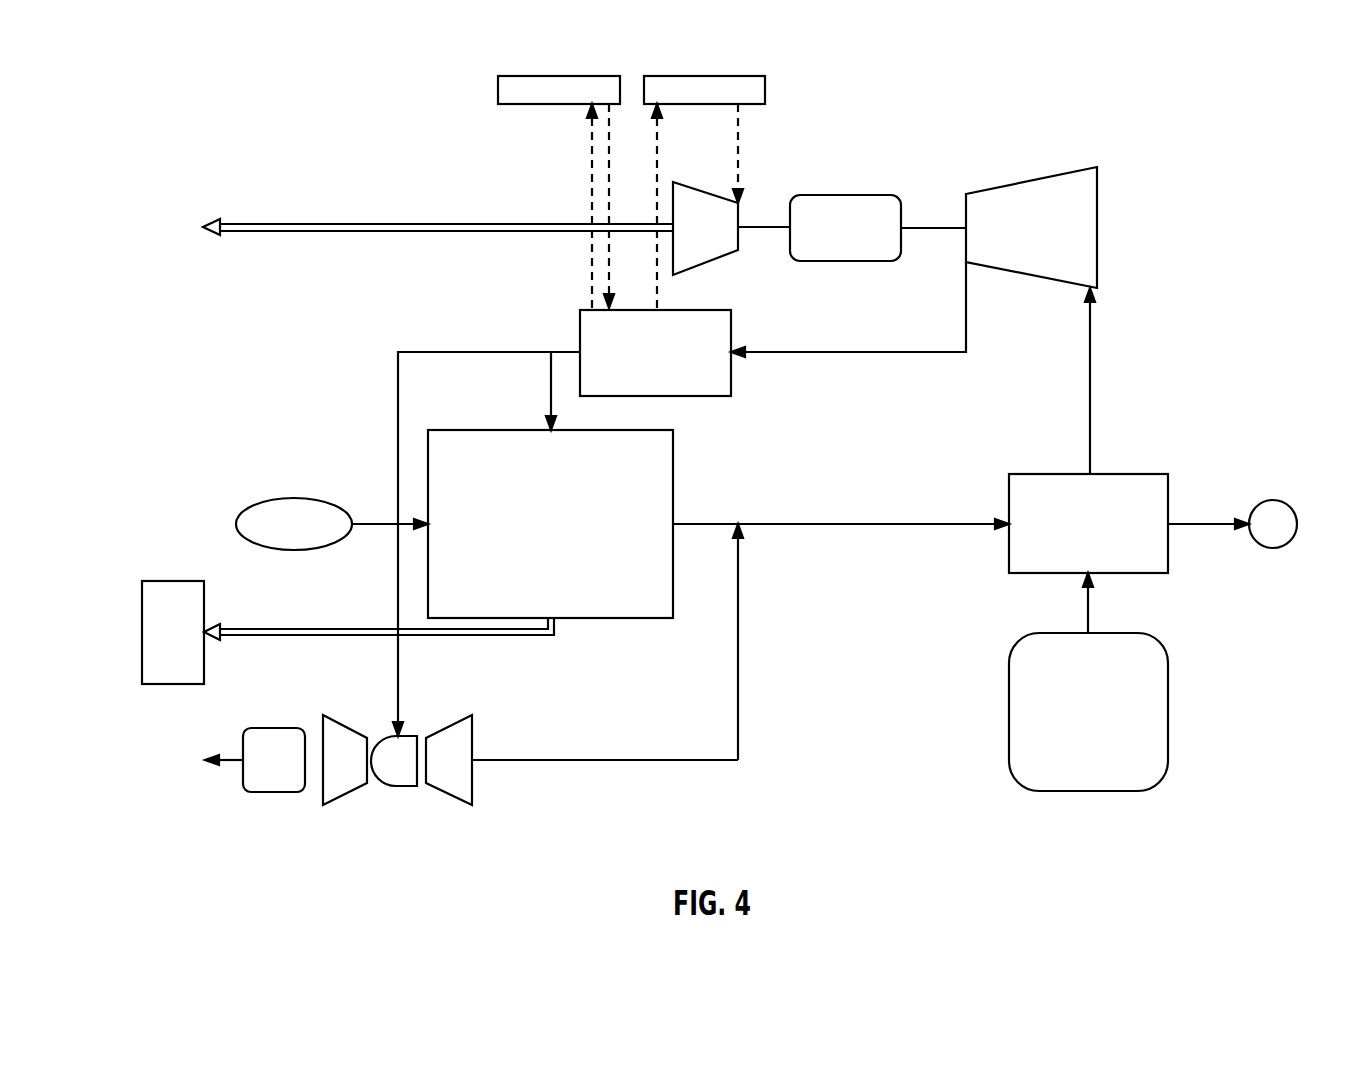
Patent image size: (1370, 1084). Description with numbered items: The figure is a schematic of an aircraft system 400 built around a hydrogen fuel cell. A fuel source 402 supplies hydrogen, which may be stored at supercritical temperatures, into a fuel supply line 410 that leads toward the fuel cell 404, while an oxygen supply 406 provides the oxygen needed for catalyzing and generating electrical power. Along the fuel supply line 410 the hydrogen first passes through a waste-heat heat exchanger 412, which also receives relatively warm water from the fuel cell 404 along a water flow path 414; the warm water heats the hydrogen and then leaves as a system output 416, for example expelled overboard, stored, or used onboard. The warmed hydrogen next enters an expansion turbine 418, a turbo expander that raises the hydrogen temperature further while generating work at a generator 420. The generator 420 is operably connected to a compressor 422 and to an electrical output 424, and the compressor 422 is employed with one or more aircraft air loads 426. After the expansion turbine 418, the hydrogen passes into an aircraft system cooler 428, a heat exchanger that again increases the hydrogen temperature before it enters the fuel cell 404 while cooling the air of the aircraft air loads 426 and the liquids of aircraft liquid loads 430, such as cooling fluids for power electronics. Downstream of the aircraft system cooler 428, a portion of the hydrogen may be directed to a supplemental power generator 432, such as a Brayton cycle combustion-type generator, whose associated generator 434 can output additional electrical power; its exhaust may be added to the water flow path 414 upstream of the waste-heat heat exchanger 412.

The aircraft system 400 is at (1152, 106).
The fuel source 402 is at (1168, 710).
The fuel cell 404 is at (636, 618).
The oxygen supply 406 is at (255, 505).
The fuel supply line 410 is at (966, 330).
The waste-heat heat exchanger 412 is at (1168, 492).
The water flow path 414 is at (838, 524).
The system output 416 is at (1275, 500).
The expansion turbine 418 is at (1058, 172).
The generator 420 is at (862, 195).
The compressor 422 is at (708, 268).
The electrical output 424 is at (515, 232).
The aircraft air loads 426 is at (748, 76).
The aircraft system cooler 428 is at (722, 396).
The aircraft liquid loads 430 is at (515, 76).
The supplemental power generator 432 is at (462, 806).
The associated generator 434 is at (246, 778).